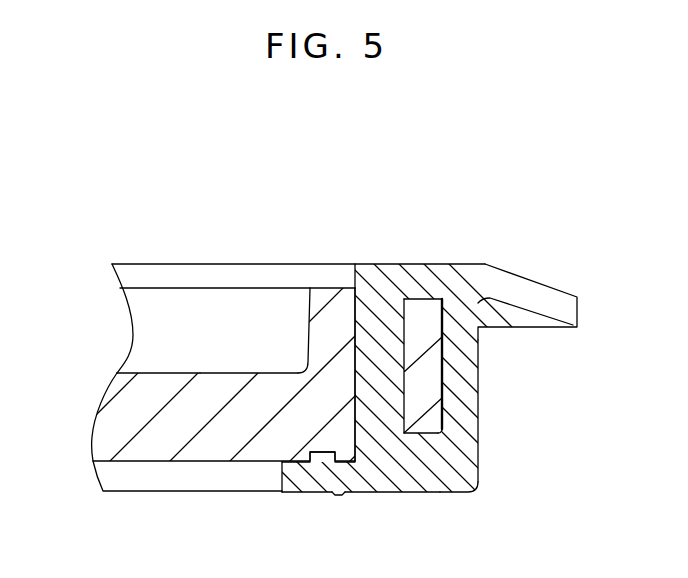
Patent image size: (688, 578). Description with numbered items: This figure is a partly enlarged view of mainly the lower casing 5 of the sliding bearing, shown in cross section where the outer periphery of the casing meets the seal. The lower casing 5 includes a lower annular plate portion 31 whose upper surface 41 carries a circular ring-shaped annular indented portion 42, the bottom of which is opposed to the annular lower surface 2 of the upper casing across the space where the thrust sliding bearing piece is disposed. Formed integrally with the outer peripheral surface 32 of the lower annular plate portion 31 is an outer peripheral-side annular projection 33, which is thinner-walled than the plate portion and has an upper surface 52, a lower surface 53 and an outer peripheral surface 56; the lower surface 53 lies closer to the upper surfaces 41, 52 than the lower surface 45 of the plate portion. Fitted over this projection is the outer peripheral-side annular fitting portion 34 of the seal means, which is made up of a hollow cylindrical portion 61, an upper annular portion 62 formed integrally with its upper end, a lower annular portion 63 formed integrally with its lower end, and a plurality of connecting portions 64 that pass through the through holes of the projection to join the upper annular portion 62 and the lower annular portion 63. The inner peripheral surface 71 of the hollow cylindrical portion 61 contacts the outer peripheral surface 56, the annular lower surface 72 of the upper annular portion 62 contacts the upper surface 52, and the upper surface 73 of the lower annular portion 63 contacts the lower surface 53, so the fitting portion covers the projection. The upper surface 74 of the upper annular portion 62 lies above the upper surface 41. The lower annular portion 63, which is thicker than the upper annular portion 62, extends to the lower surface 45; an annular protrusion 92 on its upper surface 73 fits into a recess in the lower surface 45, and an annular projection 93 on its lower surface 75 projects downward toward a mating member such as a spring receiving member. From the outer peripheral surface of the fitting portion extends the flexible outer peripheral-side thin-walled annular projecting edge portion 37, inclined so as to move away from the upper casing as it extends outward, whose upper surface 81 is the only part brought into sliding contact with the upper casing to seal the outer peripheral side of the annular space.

The lower casing 5 is at (143, 272).
The upper surface 41 is at (203, 282).
The upper surface 74 is at (260, 264).
The annular lower surface 2 is at (175, 373).
The annular indented portion 42 is at (255, 373).
The lower annular plate portion 31 is at (100, 428).
The connecting portion 64 is at (362, 333).
The annular protrusion 92 is at (323, 450).
The outer peripheral surface 32 is at (362, 403).
The lower surface 45 is at (187, 464).
The upper annular portion 62 is at (381, 270).
The upper surface 81 is at (523, 280).
The outer peripheral-side thin-walled annular projecting edge portion 37 is at (572, 319).
The hollow cylindrical portion 61 is at (467, 347).
The outer peripheral surface 56 is at (462, 370).
The outer peripheral-side annular projection 33 is at (445, 392).
The outer peripheral-side annular fitting portion 34 is at (463, 458).
The lower annular portion 63 is at (373, 480).
The annular projection 93 is at (337, 494).
The lower surface 75 is at (285, 493).
The upper surface 52 is at (417, 298).
The annular lower surface 72 is at (420, 300).
The inner peripheral surface 71 is at (437, 318).
The lower surface 53 is at (432, 435).
The upper surface 73 is at (443, 435).